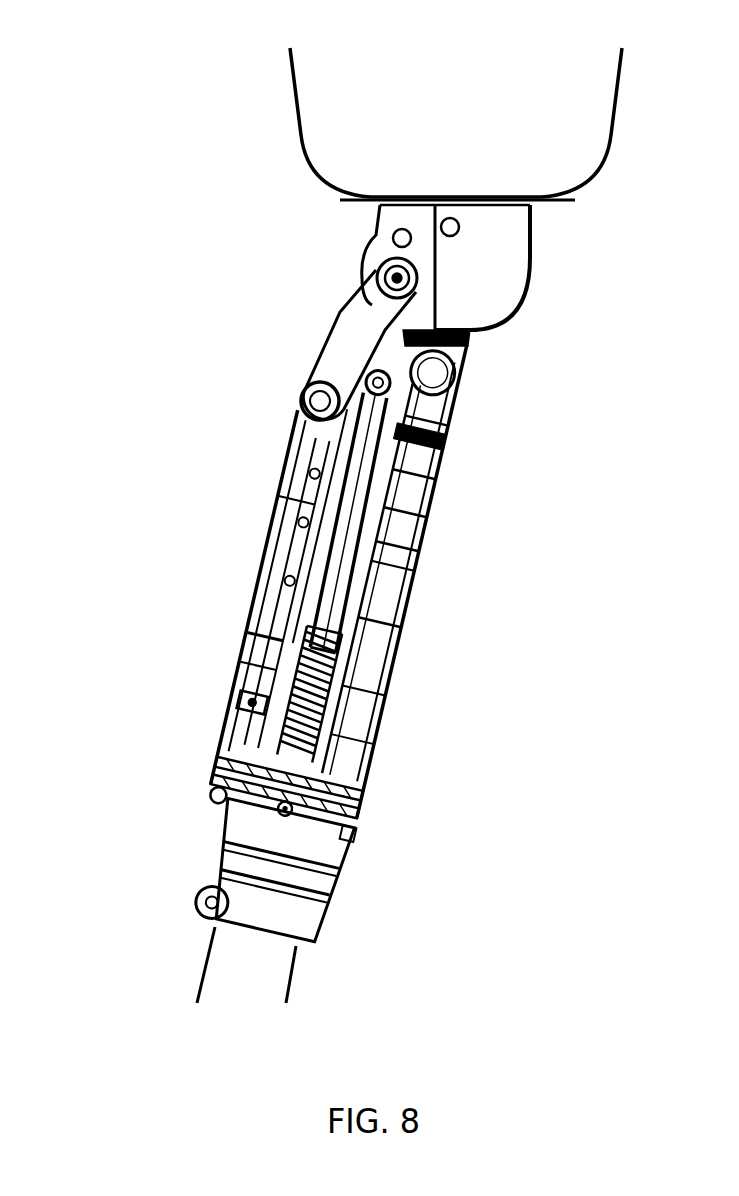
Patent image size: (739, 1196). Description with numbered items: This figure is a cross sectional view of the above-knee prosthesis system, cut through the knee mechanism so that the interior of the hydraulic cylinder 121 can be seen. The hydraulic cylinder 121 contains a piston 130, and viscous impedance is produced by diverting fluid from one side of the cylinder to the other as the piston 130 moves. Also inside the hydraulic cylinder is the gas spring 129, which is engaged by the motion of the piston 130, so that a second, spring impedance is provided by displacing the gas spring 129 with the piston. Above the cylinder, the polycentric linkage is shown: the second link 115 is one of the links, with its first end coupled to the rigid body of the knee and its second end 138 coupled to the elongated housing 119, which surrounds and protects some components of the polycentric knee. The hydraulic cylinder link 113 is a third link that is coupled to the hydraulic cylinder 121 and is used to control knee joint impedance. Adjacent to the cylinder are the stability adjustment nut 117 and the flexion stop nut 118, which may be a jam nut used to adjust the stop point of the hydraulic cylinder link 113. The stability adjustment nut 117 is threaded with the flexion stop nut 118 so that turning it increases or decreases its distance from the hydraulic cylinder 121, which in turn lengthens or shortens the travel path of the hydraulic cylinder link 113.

The hydraulic cylinder link 113 is at (456, 353).
The second link 115 is at (294, 330).
The stability adjustment nut 117 is at (458, 414).
The flexion stop nut 118 is at (440, 458).
The housing 119 is at (300, 485).
The hydraulic cylinder 121 is at (413, 600).
The gas spring 129 is at (283, 748).
The piston 130 is at (195, 694).
The second end of the second link 138 is at (243, 702).